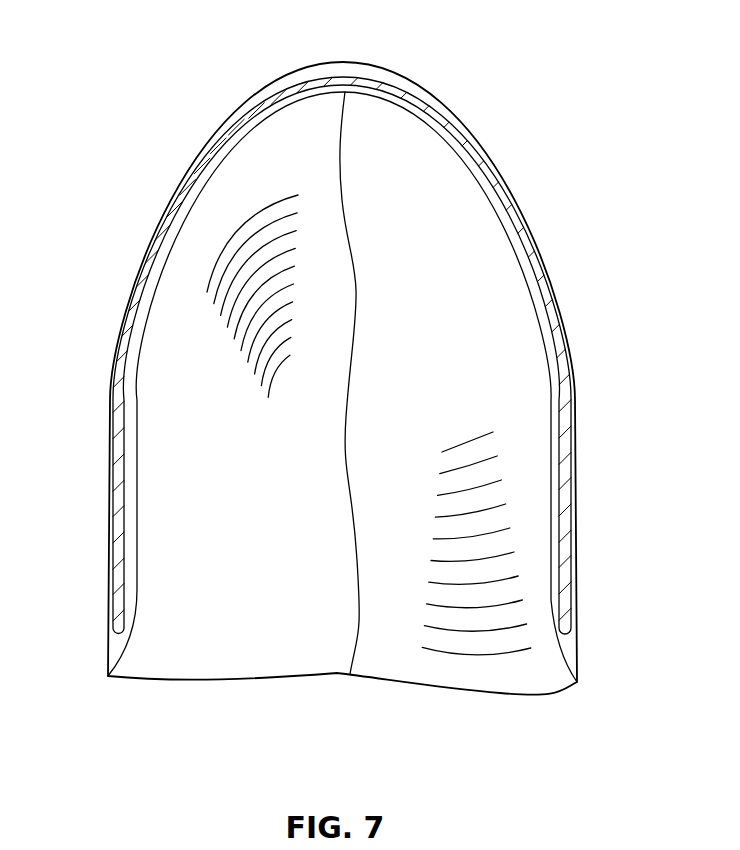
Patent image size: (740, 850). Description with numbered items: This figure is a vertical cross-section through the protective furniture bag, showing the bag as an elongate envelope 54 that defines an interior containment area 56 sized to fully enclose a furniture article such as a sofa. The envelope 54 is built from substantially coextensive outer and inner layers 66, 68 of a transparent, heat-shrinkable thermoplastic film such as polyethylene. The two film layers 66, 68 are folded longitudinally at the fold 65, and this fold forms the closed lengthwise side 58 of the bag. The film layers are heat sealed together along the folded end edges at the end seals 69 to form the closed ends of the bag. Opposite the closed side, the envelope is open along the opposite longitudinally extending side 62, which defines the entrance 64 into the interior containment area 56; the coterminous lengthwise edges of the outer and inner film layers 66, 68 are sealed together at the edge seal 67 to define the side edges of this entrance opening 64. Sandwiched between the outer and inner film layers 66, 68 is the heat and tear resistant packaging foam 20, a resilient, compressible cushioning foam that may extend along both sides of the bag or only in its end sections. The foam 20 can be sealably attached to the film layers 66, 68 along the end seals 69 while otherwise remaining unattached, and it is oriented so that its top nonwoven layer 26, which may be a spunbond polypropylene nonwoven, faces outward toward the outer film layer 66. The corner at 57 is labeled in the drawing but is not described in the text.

The heat and tear resistant packaging foam 20 is at (187, 193).
The top nonwoven layer 26 is at (208, 157).
The elongate envelope 54 is at (148, 243).
The interior containment area 56 is at (403, 660).
The right corner 57 is at (577, 683).
The closed longitudinally extending side 58 is at (360, 62).
The opposite longitudinally extending side 62 is at (213, 682).
The entrance 64 is at (317, 673).
The longitudinal fold 65 is at (325, 62).
The outer layer 66 is at (128, 318).
The lengthwise edge seal 67 is at (108, 680).
The inner layer 68 is at (157, 303).
The end seal 69 is at (346, 415).